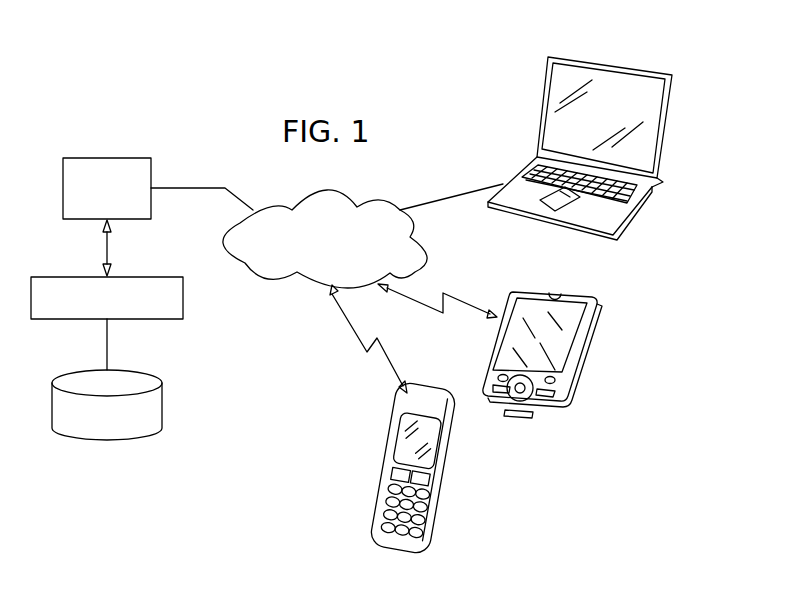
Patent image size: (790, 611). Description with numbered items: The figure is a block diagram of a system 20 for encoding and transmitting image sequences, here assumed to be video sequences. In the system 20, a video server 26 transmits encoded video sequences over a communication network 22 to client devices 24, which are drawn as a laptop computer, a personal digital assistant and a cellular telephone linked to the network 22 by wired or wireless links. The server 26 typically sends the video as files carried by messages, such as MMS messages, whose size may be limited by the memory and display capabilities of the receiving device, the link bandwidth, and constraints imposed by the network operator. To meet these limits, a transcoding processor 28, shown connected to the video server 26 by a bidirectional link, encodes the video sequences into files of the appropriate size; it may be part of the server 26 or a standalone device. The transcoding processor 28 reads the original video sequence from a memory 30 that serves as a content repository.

The system 20 is at (168, 112).
The communication network 22 is at (298, 203).
The client devices 24 is at (517, 167).
The video server 26 is at (151, 169).
The transcoding processor 28 is at (157, 277).
The memory 30 is at (162, 399).